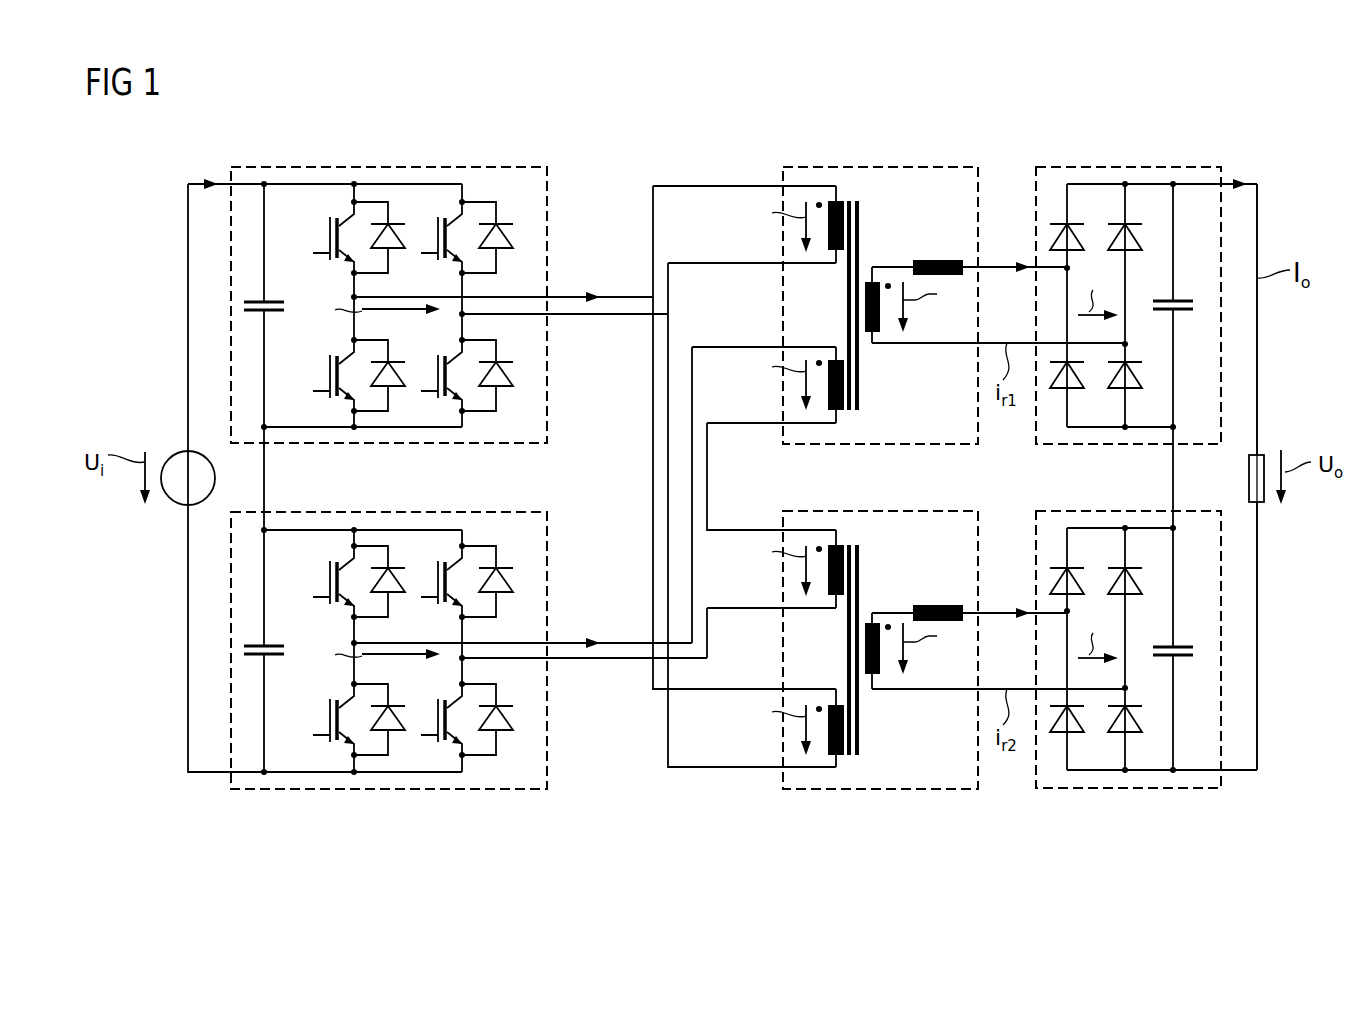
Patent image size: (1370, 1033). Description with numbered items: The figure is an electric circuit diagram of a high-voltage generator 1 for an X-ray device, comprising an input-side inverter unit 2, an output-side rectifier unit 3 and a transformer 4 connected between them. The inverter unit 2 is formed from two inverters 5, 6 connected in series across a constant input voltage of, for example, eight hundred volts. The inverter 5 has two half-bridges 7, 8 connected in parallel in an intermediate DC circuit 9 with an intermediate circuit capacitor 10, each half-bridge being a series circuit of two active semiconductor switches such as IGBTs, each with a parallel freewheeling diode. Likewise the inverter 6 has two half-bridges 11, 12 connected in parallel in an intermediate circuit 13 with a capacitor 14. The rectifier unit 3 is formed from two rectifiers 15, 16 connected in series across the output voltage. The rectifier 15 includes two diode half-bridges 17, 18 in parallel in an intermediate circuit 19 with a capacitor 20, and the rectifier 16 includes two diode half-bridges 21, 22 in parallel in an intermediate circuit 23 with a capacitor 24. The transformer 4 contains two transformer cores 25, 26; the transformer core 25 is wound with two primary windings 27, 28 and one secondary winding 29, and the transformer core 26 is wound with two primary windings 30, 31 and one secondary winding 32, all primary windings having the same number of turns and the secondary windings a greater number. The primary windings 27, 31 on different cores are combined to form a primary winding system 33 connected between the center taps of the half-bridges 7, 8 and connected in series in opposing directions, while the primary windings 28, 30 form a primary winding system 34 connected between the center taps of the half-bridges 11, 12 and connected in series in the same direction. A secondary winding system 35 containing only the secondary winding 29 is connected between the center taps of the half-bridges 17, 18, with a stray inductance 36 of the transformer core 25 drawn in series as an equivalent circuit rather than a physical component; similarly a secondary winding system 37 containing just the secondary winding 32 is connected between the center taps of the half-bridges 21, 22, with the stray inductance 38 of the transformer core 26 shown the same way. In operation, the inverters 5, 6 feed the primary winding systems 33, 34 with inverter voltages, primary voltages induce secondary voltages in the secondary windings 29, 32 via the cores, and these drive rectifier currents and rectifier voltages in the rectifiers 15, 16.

The high-voltage generator 1 is at (1272, 130).
The inverter unit 2 is at (469, 478).
The rectifier unit 3 is at (1146, 477).
The transformer 4 is at (942, 167).
The inverter 5 is at (449, 315).
The inverter 6 is at (469, 684).
The half-bridge 7 is at (362, 184).
The half-bridge 8 is at (470, 184).
The intermediate circuit 9 is at (316, 184).
The capacitor 10 is at (275, 301).
The half-bridge 11 is at (363, 772).
The half-bridge 12 is at (470, 772).
The intermediate circuit 13 is at (315, 772).
The capacitor 14 is at (275, 645).
The rectifier 15 is at (1146, 313).
The rectifier 16 is at (1146, 684).
The half-bridge 17 is at (1063, 198).
The half-bridge 18 is at (1133, 198).
The intermediate circuit 19 is at (1094, 184).
The capacitor 20 is at (1185, 300).
The half-bridge 21 is at (1060, 758).
The half-bridge 22 is at (1133, 758).
The intermediate circuit 23 is at (1092, 770).
The capacitor 24 is at (1185, 645).
The transformer core 25 is at (856, 201).
The transformer core 26 is at (856, 545).
The primary winding 27 is at (838, 201).
The primary winding 28 is at (838, 360).
The secondary winding 29 is at (868, 282).
The primary winding 30 is at (838, 545).
The primary winding 31 is at (838, 705).
The secondary winding 32 is at (868, 623).
The primary winding system 33 is at (738, 186).
The primary winding system 34 is at (740, 347).
The secondary winding system 35 is at (997, 267).
The stray inductance 36 is at (933, 260).
The secondary winding system 37 is at (997, 613).
The stray inductance 38 is at (933, 605).